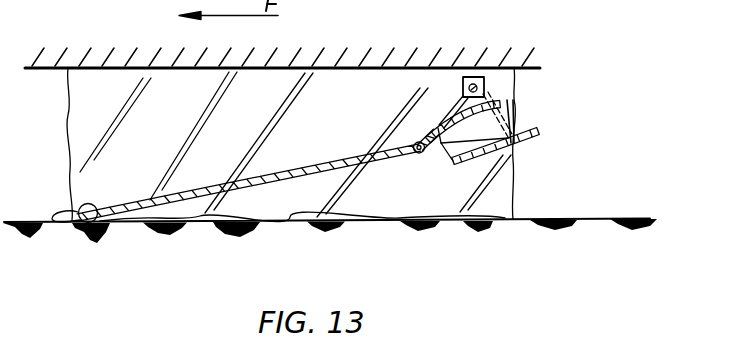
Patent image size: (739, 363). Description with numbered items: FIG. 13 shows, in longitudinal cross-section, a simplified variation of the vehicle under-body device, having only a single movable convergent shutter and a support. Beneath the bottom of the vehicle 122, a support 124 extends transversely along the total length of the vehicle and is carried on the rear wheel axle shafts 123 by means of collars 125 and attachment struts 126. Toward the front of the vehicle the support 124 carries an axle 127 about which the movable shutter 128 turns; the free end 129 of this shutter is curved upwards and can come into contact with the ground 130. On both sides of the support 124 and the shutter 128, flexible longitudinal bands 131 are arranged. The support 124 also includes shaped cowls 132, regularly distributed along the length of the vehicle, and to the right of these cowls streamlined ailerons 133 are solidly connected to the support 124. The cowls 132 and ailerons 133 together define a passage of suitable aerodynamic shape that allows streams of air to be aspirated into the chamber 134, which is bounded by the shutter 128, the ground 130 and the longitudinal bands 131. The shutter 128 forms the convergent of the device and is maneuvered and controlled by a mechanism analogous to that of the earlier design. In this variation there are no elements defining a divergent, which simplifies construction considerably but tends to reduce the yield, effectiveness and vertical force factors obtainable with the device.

The bottom of the vehicle 122 is at (364, 54).
The rear wheel axle 123 is at (483, 73).
The support 124 is at (441, 123).
The collar 125 is at (471, 77).
The attachment strut 126 is at (442, 121).
The axle 127 is at (424, 153).
The movable shutter 128 is at (263, 175).
The free end 129 is at (99, 236).
The ground 130 is at (575, 219).
The flexible longitudinal band 131 is at (136, 86).
The shaped cowl 132 is at (517, 97).
The streamlined aileron 133 is at (527, 138).
The chamber 134 is at (352, 190).